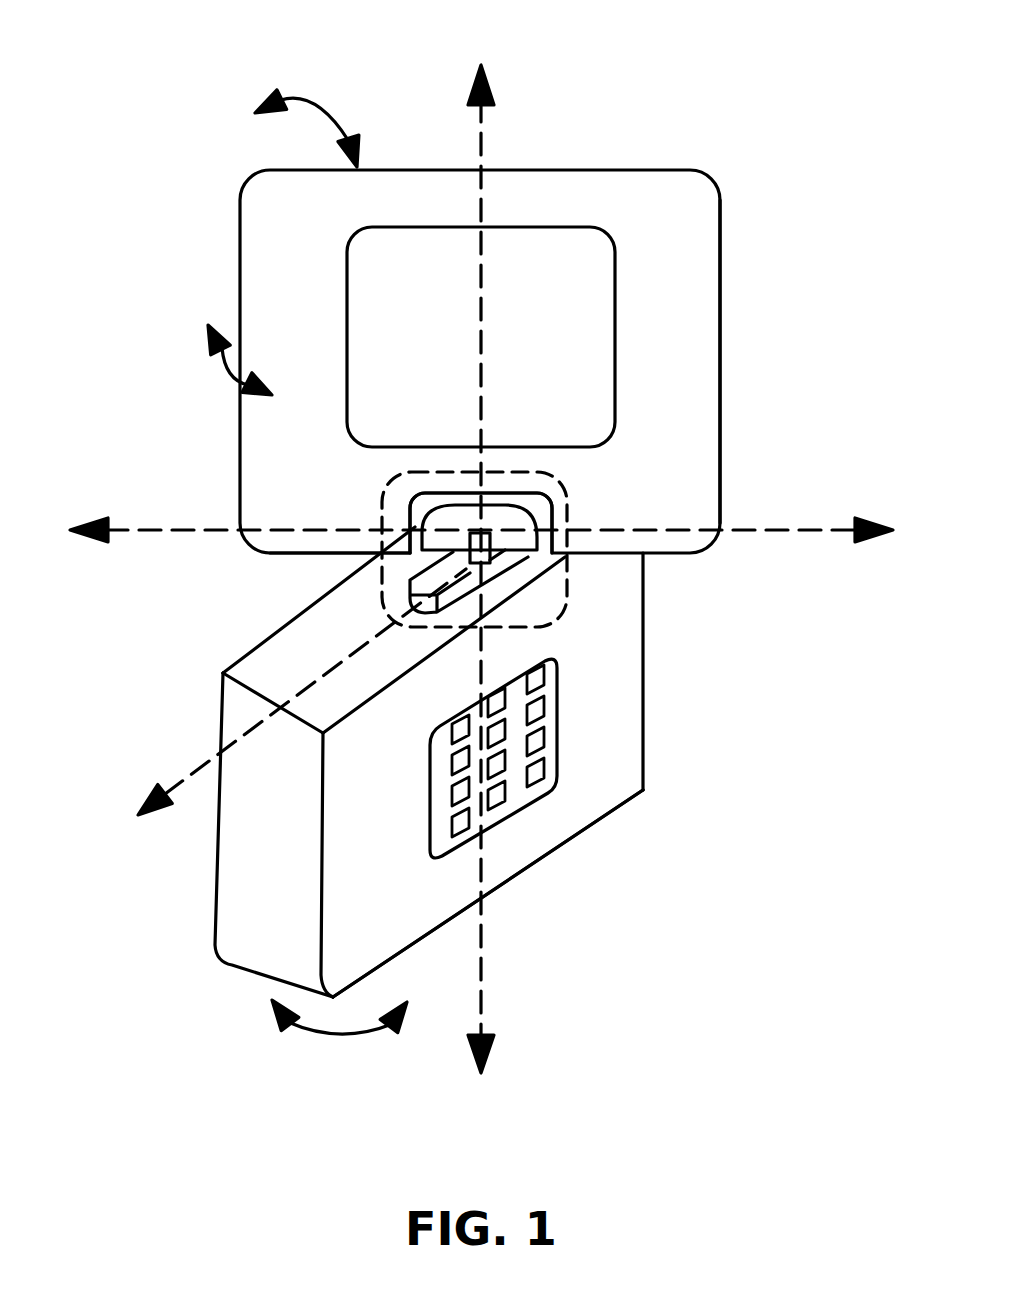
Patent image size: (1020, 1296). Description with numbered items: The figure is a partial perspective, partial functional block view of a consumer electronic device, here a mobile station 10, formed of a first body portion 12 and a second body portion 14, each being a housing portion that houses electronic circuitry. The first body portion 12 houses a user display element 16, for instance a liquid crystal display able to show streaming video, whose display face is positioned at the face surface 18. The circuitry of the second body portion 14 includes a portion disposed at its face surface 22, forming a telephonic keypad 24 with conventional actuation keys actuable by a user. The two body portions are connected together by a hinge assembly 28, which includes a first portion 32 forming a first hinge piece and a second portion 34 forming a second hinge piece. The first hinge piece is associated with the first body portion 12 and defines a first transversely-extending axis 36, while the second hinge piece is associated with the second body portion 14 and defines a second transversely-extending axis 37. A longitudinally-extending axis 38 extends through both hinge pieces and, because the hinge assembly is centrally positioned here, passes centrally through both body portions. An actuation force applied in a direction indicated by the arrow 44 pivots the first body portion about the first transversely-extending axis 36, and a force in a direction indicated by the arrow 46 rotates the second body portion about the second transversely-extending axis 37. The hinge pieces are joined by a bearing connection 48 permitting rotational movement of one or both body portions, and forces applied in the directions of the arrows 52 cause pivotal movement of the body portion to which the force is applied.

The mobile station 10 is at (497, 20).
The first body portion 12 is at (574, 170).
The second body portion 14 is at (645, 700).
The user display element 16 is at (594, 325).
The face surface 18 is at (700, 207).
The face surface 22 is at (588, 832).
The telephonic keypad 24 is at (560, 745).
The hinge assembly 28 is at (382, 555).
The first portion 32 is at (553, 500).
The second portion 34 is at (498, 567).
The first transversely-extending axis 36 is at (758, 530).
The second transversely-extending axis 37 is at (170, 788).
The longitudinally-extending axis 38 is at (488, 108).
The arrow 44 is at (333, 103).
The arrow 46 is at (335, 1030).
The bearing connection 48 is at (518, 560).
The arrows 52 is at (230, 376).